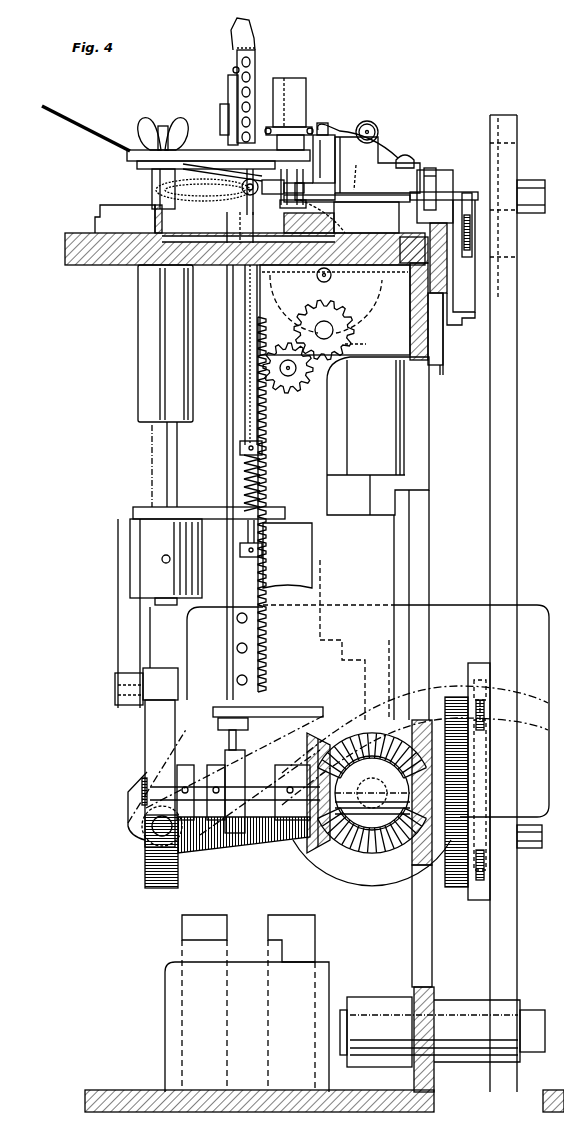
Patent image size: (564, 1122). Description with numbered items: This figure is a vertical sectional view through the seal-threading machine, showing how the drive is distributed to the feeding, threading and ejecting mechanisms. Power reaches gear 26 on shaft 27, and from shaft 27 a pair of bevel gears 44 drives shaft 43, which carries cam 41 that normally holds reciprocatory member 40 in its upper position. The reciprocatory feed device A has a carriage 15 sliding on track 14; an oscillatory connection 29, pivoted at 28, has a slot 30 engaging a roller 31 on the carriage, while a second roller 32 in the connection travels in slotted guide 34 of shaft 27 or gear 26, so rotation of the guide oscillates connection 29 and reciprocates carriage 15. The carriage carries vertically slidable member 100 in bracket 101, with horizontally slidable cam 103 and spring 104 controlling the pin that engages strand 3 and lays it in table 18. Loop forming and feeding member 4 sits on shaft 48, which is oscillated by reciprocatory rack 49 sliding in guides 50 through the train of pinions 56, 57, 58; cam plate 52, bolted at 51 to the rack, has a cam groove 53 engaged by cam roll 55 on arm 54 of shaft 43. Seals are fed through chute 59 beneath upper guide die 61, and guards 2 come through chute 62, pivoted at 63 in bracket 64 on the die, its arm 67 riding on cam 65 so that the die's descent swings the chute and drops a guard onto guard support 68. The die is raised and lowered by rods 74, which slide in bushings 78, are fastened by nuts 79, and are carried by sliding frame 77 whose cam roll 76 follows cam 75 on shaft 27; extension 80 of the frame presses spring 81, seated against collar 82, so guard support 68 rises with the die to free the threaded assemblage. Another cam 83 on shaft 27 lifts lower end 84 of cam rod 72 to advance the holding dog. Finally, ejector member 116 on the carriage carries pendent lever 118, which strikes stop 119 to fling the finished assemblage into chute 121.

The gripping and severing member or guard 2 is at (254, 184).
The strand 3 is at (158, 193).
The loop forming and feeding member 4 is at (356, 170).
The track 14 is at (448, 278).
The carriage 15 is at (443, 170).
The table 18 is at (322, 227).
The gear 26 is at (458, 884).
The shaft 27 is at (265, 830).
The pivot 28 is at (374, 1000).
The oscillatory member or connection 29 is at (505, 533).
The slot 30 is at (505, 143).
The roller 31 is at (500, 180).
The roller 32 is at (530, 850).
The slotted guide 34 is at (480, 900).
The reciprocatory member 40 is at (380, 438).
The cam 41 is at (368, 878).
The shaft 43 is at (383, 856).
The bevel gears 44 is at (327, 856).
The shaft 48 is at (331, 282).
The reciprocatory rack 49 is at (265, 426).
The guides 50 is at (205, 565).
The bolt 51 is at (248, 648).
The cam plate 52 is at (540, 663).
The cam groove 53 is at (540, 712).
The arm 54 is at (212, 858).
The cam roll 55 is at (145, 848).
The pinion 56 is at (293, 378).
The pinion 57 is at (367, 342).
The pinion 58 is at (298, 300).
The chute 59 is at (288, 82).
The upper guide die 61 is at (201, 150).
The chute 62 is at (256, 62).
The pivot 63 is at (232, 70).
The bracket 64 is at (228, 86).
The cam 65 is at (214, 176).
The arm 67 is at (220, 106).
The guard support 68 is at (246, 345).
The cam rod 72 is at (227, 289).
The rods 74 is at (152, 184).
The cam 75 is at (147, 725).
The cam roll 76 is at (165, 668).
The sliding frame 77 is at (138, 548).
The bushings 78 is at (140, 347).
The nuts 79 is at (143, 135).
The extension 80 is at (199, 507).
The spring 81 is at (262, 461).
The collar 82 is at (262, 446).
The cam 83 is at (250, 765).
The lower end 84 is at (228, 748).
The vertically slidable member 100 is at (318, 130).
The bracket 101 is at (342, 128).
The horizontally slidable cam 103 is at (326, 130).
The spring 104 is at (379, 127).
The ejector member 116 is at (452, 192).
The pendent lever 118 is at (474, 232).
The stop 119 is at (462, 328).
The chute 121 is at (142, 265).
The reciprocatory feed device A is at (460, 165).